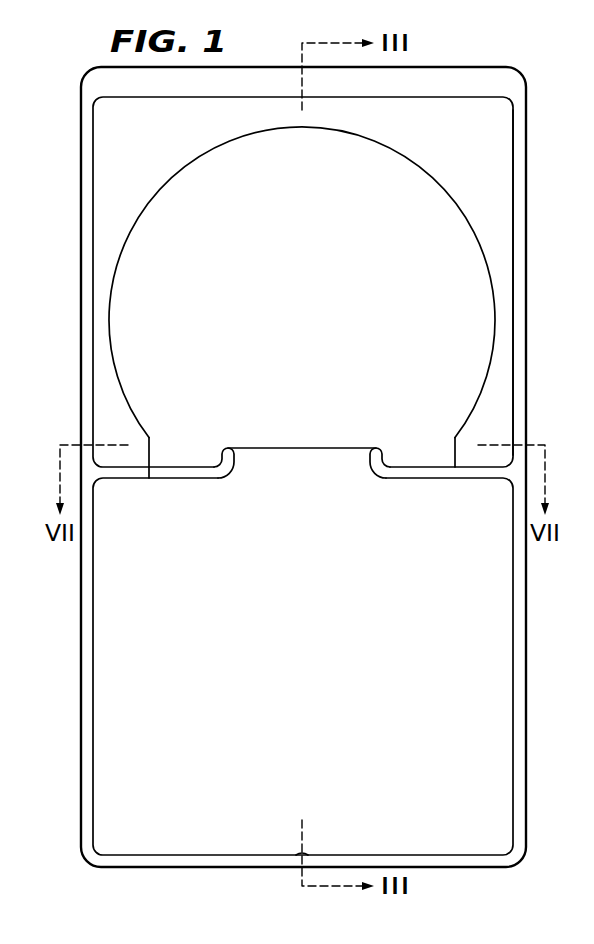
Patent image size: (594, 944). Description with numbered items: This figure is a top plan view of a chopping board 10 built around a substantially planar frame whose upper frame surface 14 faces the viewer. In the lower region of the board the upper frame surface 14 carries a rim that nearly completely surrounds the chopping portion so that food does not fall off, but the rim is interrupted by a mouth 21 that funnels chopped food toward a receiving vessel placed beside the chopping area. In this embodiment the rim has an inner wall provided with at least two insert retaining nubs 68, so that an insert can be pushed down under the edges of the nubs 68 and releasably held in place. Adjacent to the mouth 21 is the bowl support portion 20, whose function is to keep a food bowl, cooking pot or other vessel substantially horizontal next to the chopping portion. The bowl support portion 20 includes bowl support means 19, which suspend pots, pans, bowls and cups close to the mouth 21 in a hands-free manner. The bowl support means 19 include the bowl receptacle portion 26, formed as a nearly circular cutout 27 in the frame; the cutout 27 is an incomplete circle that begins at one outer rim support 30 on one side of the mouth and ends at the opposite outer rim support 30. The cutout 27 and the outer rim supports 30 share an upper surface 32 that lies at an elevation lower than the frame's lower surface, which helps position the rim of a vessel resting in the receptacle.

The chopping board 10 is at (544, 293).
The upper frame surface 14 is at (108, 580).
The bowl support means 19 is at (155, 404).
The bowl support portion 20 is at (271, 282).
The mouth 21 is at (350, 438).
The bowl receptacle portion 26 is at (306, 282).
The cutout 27 is at (117, 268).
The outer rim supports 30 is at (458, 436).
The upper surface 32 is at (502, 367).
The insert retaining nubs 68 is at (236, 460).